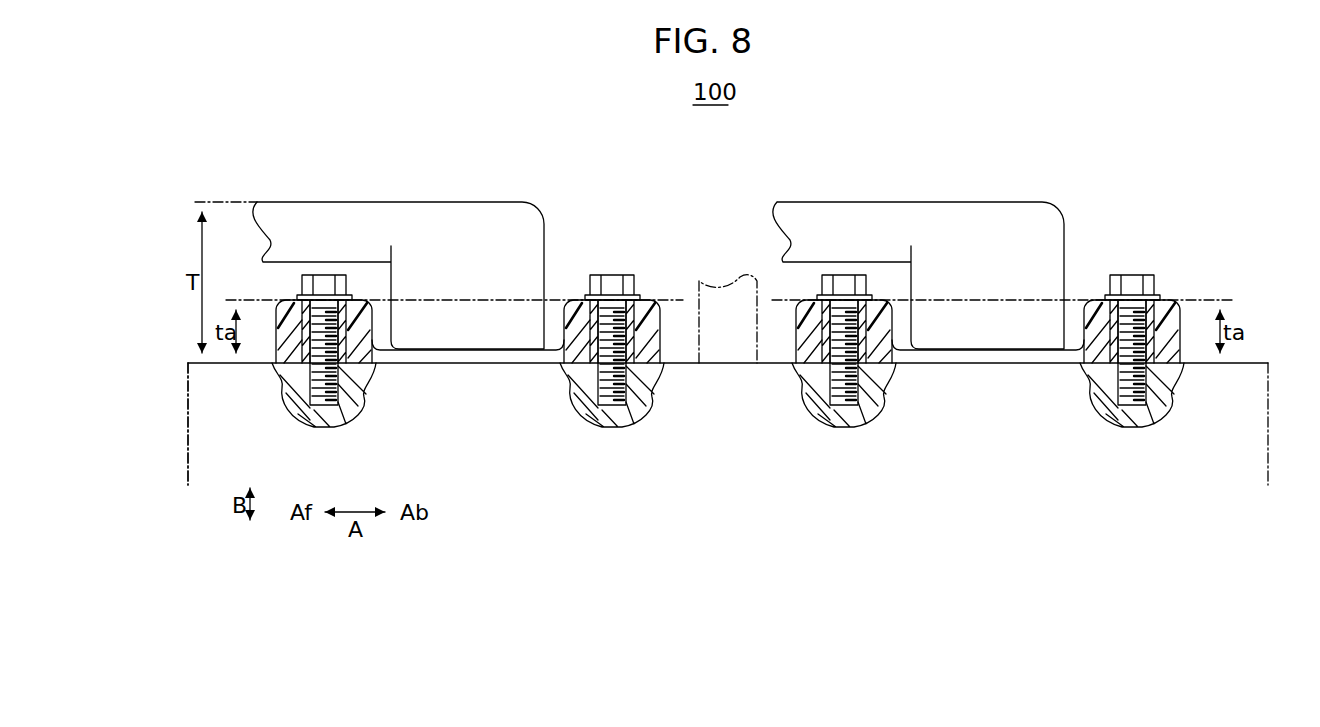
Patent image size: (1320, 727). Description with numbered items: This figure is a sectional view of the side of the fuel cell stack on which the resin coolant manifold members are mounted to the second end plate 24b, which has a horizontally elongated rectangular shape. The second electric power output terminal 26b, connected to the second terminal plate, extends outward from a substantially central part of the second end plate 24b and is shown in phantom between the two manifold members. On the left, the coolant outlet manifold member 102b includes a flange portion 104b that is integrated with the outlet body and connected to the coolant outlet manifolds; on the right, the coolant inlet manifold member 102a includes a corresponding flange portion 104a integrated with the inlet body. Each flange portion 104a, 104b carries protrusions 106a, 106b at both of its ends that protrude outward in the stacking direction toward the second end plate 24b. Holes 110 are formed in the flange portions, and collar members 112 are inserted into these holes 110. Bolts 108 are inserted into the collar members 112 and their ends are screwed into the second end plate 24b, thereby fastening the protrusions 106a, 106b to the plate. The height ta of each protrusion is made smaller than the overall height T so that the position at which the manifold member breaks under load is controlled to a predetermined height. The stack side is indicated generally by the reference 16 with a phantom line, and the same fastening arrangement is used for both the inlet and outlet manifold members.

The floor panel 16 is at (178, 425).
The second end plate 24b is at (1250, 360).
The second electric power output terminal 26b is at (720, 290).
The coolant inlet manifold member 102a is at (985, 193).
The coolant outlet manifold member 102b is at (465, 193).
The flange portion 104a is at (973, 357).
The flange portion 104b is at (475, 357).
The protrusion 106a is at (1173, 315).
The protrusion 106b is at (653, 315).
The bolt 108 is at (326, 276).
The hole 110 is at (627, 366).
The collar member 112 is at (587, 313).